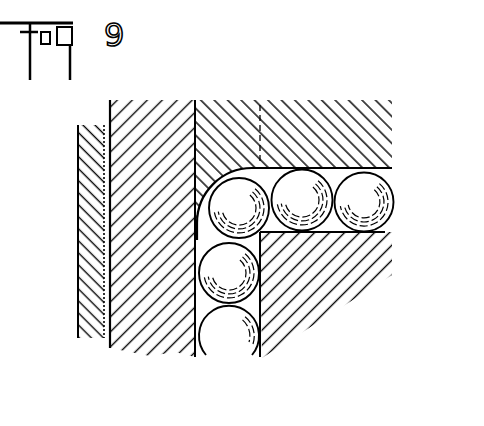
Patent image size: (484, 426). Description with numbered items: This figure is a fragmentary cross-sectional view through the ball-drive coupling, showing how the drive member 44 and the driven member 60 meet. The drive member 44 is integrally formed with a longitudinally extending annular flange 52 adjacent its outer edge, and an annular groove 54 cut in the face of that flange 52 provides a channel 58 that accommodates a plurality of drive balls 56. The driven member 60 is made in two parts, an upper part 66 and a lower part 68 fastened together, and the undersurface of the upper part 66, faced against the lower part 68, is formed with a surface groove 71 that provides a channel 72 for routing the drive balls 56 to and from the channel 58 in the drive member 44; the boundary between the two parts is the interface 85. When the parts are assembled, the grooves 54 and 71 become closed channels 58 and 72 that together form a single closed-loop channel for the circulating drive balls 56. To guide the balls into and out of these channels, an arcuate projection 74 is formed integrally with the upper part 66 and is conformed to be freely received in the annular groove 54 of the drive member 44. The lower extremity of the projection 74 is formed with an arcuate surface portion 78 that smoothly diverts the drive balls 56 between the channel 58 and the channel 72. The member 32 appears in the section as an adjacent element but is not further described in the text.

The sheet 32 is at (87, 207).
The drive member 44 is at (109, 109).
The annular flange 52 is at (147, 118).
The annular groove 54 is at (200, 249).
The drive balls 56 is at (244, 210).
The channel 58 is at (201, 304).
The driven member 60 is at (351, 104).
The upper part 66 is at (315, 122).
The lower part 68 is at (331, 250).
The surface groove 71 is at (282, 167).
The channel 72 is at (335, 167).
The arcuate projection 74 is at (227, 123).
The arcuate surface portions 78 is at (205, 203).
The interface 85 is at (346, 238).